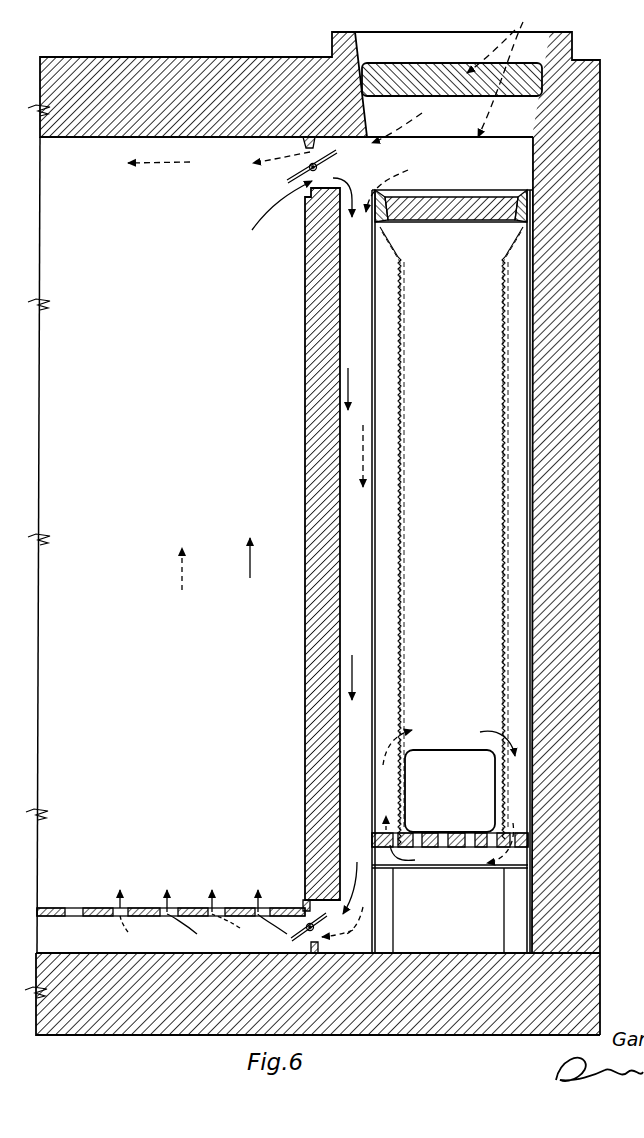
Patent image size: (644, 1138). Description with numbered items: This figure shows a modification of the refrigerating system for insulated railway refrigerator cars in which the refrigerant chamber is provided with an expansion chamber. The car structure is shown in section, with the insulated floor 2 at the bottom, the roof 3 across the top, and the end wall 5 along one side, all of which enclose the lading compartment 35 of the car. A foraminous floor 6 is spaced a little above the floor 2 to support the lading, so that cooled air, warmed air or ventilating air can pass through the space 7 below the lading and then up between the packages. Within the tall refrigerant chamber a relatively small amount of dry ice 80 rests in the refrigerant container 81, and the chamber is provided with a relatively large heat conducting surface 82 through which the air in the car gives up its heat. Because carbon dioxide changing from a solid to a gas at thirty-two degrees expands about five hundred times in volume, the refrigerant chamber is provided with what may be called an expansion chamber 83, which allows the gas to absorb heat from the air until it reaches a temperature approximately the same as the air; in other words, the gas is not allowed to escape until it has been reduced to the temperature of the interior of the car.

The insulated floor 2 is at (318, 994).
The roof 3 is at (203, 84).
The end wall 5 is at (566, 533).
The foraminous floor 6 is at (152, 907).
The space 7 is at (160, 929).
The chamber 35 is at (168, 551).
The dry ice 80 is at (450, 791).
The refrigerant container 81 is at (451, 536).
The heat conducting surface 82 is at (371, 498).
The expansion chamber 83 is at (450, 706).